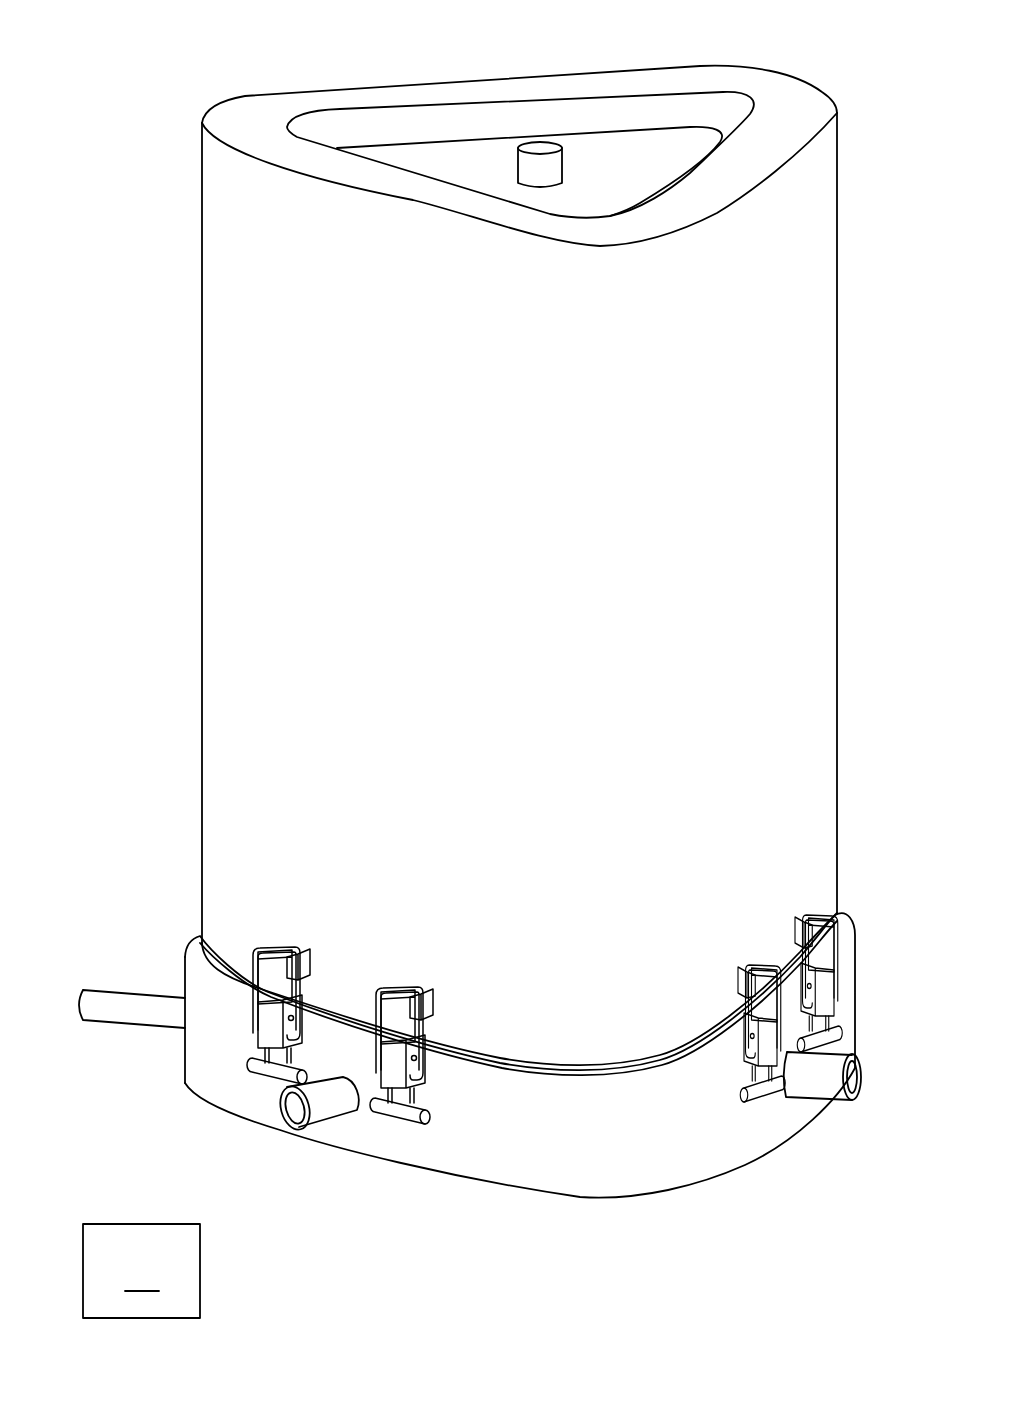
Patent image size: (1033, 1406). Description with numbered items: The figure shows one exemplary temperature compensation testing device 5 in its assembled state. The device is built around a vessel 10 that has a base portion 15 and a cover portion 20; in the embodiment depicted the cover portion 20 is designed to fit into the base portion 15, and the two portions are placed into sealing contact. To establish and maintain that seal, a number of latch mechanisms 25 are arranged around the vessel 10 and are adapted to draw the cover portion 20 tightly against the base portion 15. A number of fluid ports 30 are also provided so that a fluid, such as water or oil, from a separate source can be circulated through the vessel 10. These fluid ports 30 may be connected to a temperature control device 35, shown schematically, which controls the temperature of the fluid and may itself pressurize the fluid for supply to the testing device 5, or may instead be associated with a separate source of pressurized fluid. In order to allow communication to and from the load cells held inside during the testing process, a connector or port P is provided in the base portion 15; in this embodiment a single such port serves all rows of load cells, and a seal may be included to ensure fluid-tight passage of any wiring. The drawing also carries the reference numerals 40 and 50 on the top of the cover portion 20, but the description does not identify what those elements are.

The temperature compensation testing device 5 is at (131, 106).
The vessel 10 is at (160, 667).
The base portion 15 is at (632, 1120).
The cover portion 20 is at (295, 437).
The latch mechanisms 25 is at (406, 1110).
The fluid ports 30 is at (122, 1000).
The temperature control device 35 is at (312, 1105).
The top opening / rim 40 is at (448, 155).
The vent fitting 50 is at (542, 145).
The port P is at (816, 1078).